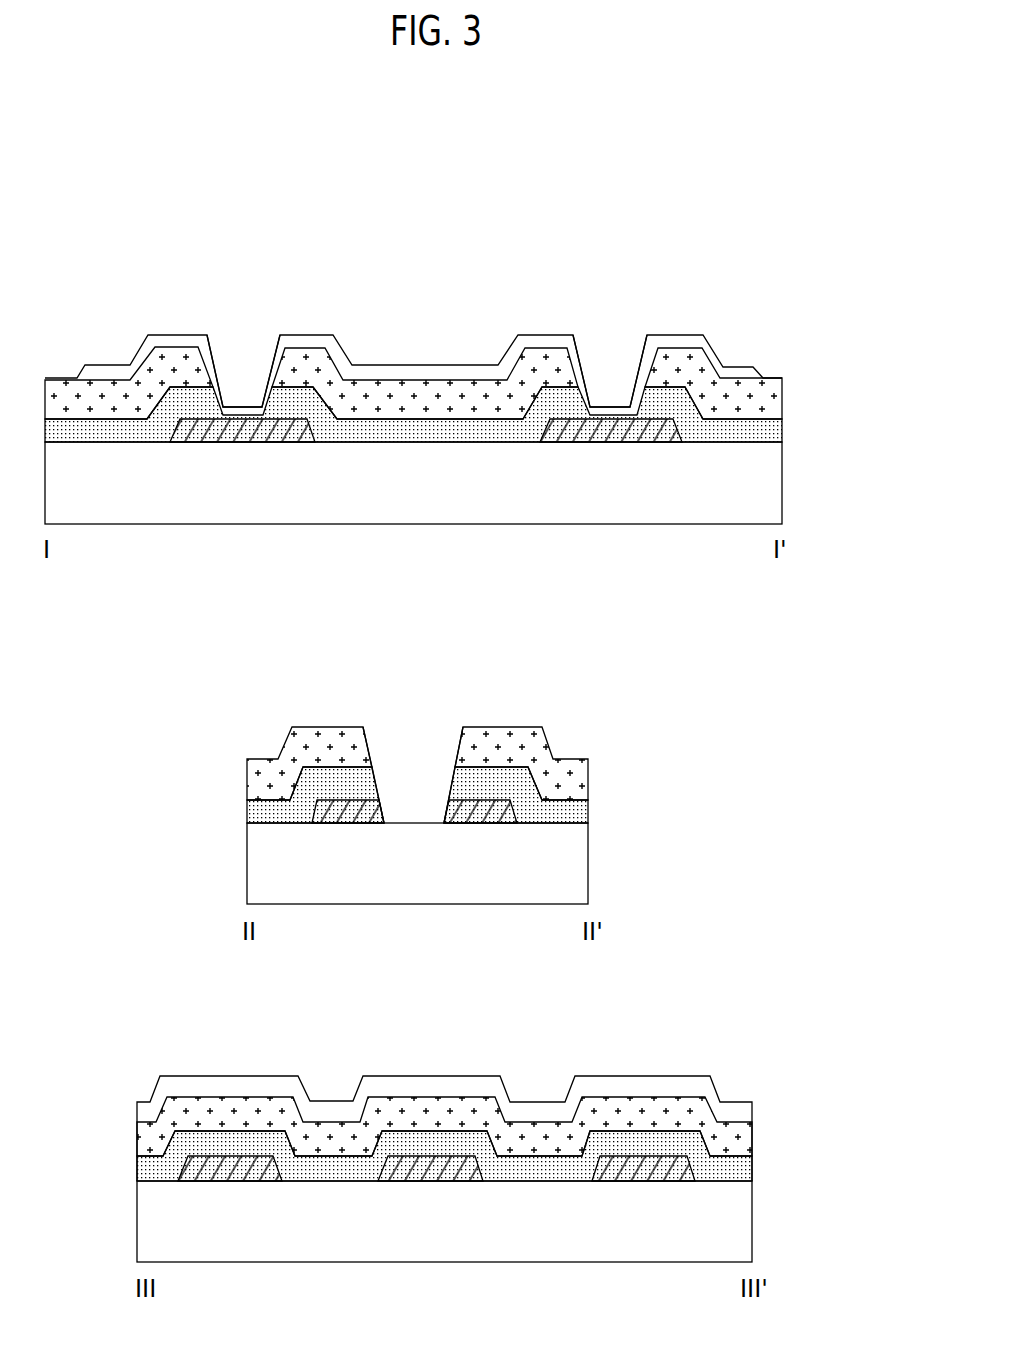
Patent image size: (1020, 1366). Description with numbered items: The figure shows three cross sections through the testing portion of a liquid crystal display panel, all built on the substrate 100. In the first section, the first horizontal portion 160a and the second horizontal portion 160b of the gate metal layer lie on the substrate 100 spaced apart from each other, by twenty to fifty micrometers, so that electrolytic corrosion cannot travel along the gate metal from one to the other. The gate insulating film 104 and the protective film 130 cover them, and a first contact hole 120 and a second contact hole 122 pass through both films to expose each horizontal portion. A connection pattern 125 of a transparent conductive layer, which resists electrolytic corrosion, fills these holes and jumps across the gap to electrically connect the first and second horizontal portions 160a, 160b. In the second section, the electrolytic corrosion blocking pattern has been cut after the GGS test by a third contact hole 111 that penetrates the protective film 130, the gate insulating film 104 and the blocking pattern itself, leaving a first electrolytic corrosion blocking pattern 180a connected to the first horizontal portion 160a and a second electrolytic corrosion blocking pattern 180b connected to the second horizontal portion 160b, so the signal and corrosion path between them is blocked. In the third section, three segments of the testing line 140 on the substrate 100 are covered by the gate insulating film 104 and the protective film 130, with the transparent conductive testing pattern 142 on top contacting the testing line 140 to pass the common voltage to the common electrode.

The substrate 100 is at (773, 487).
The gate insulating film 104 is at (773, 434).
The protective film 130 is at (773, 398).
The connection pattern 125 is at (690, 340).
The first contact hole 120 is at (243, 353).
The second contact hole 122 is at (612, 355).
The first horizontal portion 160a is at (243, 433).
The second horizontal portion 160b is at (614, 433).
The third contact hole 111 is at (417, 757).
The first electrolytic corrosion blocking pattern 180a is at (348, 812).
The second electrolytic corrosion blocking pattern 180b is at (480, 812).
The testing line 140 is at (230, 1172).
The testing pattern 142 is at (742, 1113).